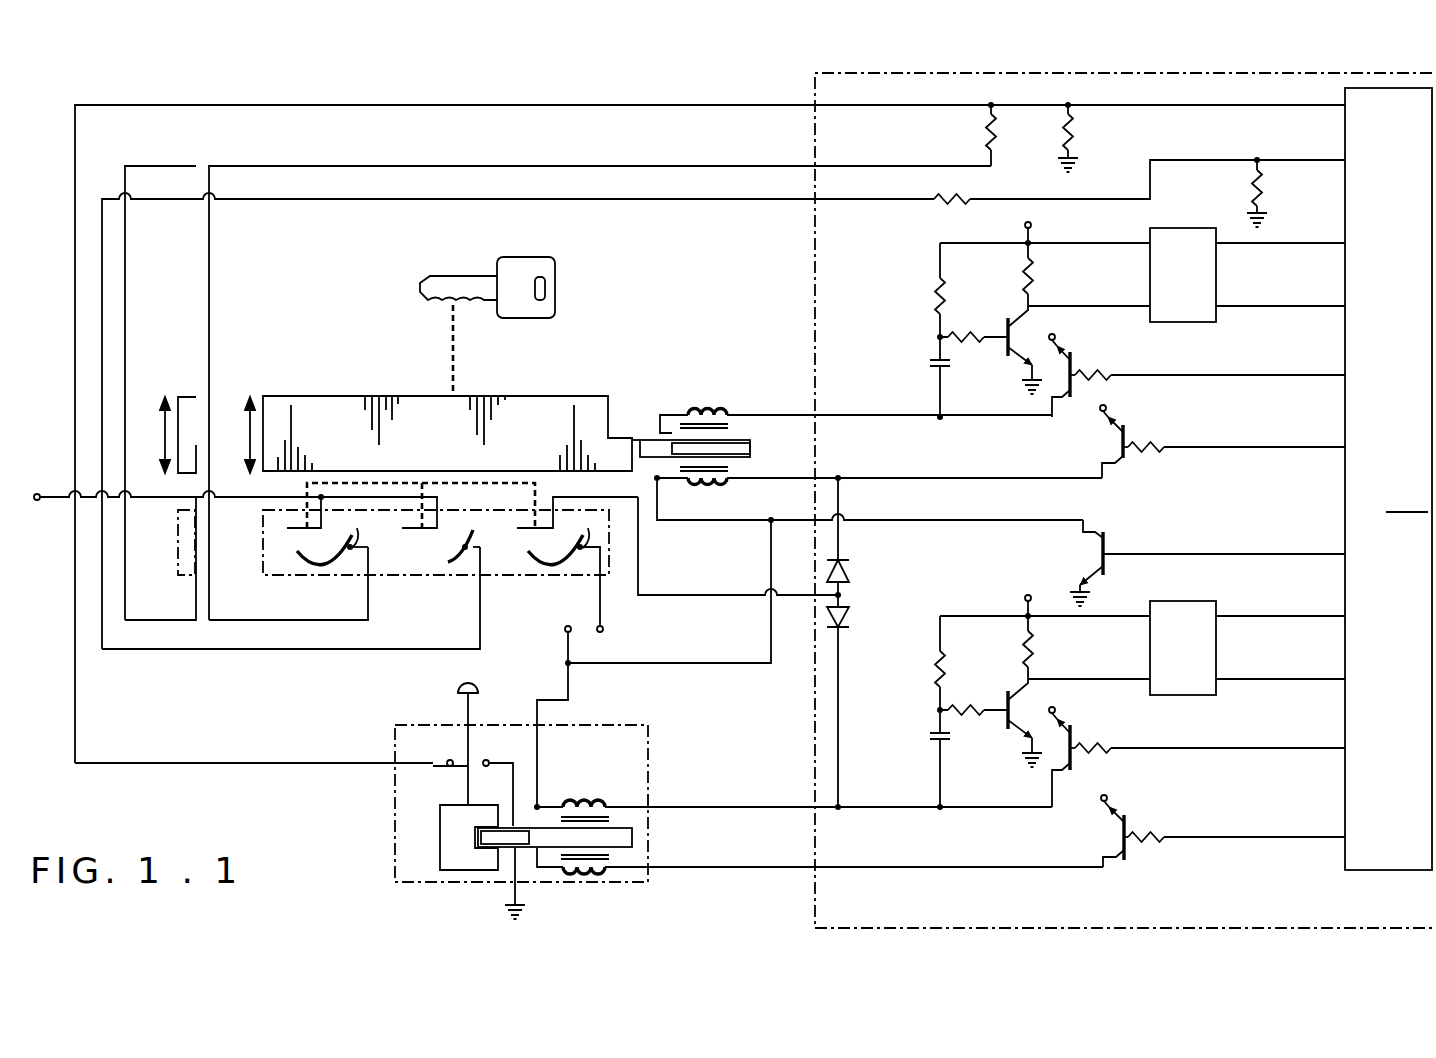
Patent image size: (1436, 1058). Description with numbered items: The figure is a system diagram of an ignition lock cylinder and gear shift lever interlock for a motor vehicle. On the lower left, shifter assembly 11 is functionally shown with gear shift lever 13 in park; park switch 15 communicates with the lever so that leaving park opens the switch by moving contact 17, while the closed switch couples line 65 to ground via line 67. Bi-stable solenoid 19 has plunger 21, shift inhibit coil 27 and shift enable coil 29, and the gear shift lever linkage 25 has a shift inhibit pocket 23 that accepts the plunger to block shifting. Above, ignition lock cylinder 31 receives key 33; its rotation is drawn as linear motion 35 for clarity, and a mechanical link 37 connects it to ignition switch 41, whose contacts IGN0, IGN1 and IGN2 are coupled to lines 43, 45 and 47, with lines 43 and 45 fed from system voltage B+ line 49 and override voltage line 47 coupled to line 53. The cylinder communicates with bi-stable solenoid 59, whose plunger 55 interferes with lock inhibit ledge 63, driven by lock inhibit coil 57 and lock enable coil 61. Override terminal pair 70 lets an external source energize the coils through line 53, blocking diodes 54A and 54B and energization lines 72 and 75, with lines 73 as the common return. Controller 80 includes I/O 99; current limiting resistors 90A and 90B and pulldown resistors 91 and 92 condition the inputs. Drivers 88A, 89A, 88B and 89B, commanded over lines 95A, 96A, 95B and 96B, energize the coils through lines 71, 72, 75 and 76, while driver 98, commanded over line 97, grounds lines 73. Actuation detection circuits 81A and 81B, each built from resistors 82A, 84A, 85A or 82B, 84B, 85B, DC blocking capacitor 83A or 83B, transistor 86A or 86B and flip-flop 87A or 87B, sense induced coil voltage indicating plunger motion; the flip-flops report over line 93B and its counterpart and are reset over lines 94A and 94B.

The shifter assembly 11 is at (392, 845).
The gear shift lever 13 is at (458, 690).
The park switch 15 is at (490, 725).
The moving contact 17 is at (433, 768).
The bi-stable solenoid 19 is at (577, 790).
The plunger 21 is at (632, 838).
The shift inhibit pocket 23 is at (505, 842).
The gear shift lever linkage 25 is at (440, 842).
The shift inhibit coil 27 is at (600, 875).
The shift enable coil 29 is at (605, 800).
The ignition lock cylinder 31 is at (367, 380).
The key 33 is at (452, 272).
The linear motion 35 is at (163, 432).
The mechanical link 37 is at (455, 482).
The ignition switch 41 is at (176, 541).
The line 43 is at (780, 165).
The line 45 is at (772, 200).
The override voltage line 47 is at (603, 598).
The system voltage B+ line 49 is at (60, 496).
The line 53 is at (695, 600).
The blocking diode 54A is at (855, 575).
The blocking diode 54B is at (855, 618).
The plunger 55 is at (752, 440).
The lock inhibit coil 57 is at (700, 485).
The bi-stable solenoid 59 is at (678, 403).
The lock enable coil 61 is at (725, 410).
The lock inhibit ledge 63 is at (620, 432).
The line 65 is at (72, 598).
The line 67 is at (520, 898).
The override terminal pair 70 is at (592, 640).
The energization line 71 is at (805, 408).
The energization line 72 is at (797, 478).
The lines 73 is at (716, 520).
The energization line 75 is at (770, 805).
The energization line 76 is at (722, 870).
The controller 80 is at (810, 912).
The actuation detection circuit 81A is at (885, 274).
The actuation detection circuit 81B is at (905, 674).
The resistor 82A is at (935, 300).
The resistor 82B is at (935, 690).
The DC blocking capacitor 83A is at (935, 352).
The DC blocking capacitor 83B is at (930, 740).
The resistor 84A is at (960, 330).
The resistor 84B is at (963, 706).
The resistor 85A is at (1035, 285).
The resistor 85B is at (1035, 660).
The transistor 86A is at (1000, 348).
The transistor 86B is at (1000, 740).
The flip-flop 87A is at (1176, 226).
The flip-flop 87B is at (1201, 601).
The driver 88A is at (1086, 352).
The driver 88B is at (1086, 728).
The driver 89A is at (1068, 412).
The driver 89B is at (1136, 852).
The current limiting resistor 90A is at (988, 128).
The current limiting resistor 90B is at (950, 198).
The resistor 91 is at (1075, 132).
The pulldown resistor 92 is at (1265, 186).
The line 93B is at (1270, 616).
The line 94A is at (1250, 248).
The line 94B is at (1270, 679).
The line 95A is at (1268, 312).
The line 95B is at (1275, 748).
The line 96A is at (1268, 380).
The line 96B is at (1225, 837).
The line 97 is at (1270, 450).
The driver 98 is at (1120, 546).
The I/O 99 is at (1370, 872).